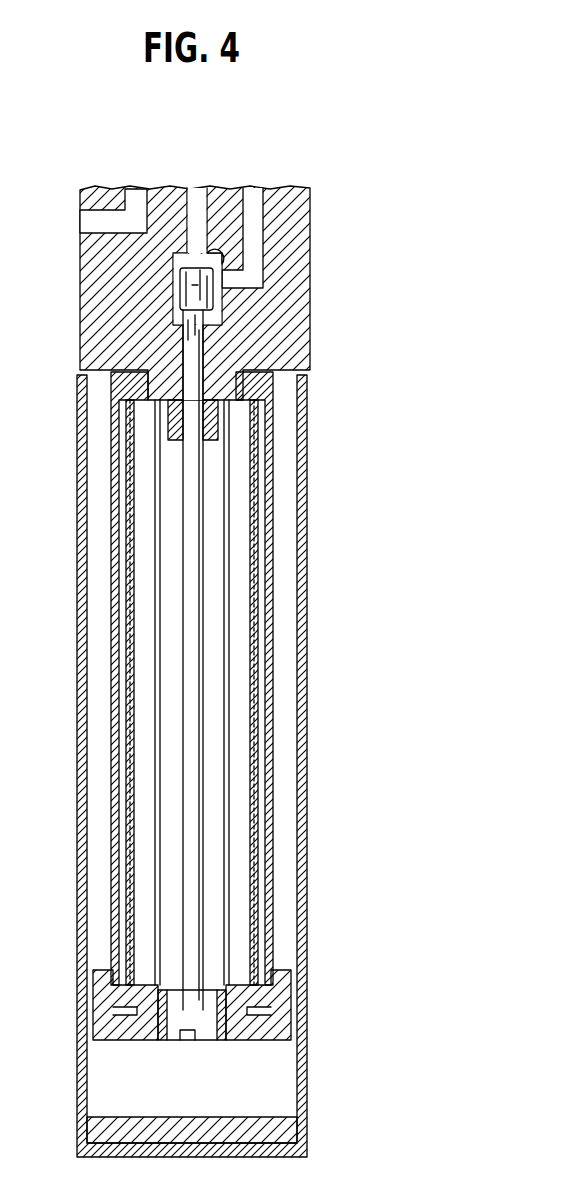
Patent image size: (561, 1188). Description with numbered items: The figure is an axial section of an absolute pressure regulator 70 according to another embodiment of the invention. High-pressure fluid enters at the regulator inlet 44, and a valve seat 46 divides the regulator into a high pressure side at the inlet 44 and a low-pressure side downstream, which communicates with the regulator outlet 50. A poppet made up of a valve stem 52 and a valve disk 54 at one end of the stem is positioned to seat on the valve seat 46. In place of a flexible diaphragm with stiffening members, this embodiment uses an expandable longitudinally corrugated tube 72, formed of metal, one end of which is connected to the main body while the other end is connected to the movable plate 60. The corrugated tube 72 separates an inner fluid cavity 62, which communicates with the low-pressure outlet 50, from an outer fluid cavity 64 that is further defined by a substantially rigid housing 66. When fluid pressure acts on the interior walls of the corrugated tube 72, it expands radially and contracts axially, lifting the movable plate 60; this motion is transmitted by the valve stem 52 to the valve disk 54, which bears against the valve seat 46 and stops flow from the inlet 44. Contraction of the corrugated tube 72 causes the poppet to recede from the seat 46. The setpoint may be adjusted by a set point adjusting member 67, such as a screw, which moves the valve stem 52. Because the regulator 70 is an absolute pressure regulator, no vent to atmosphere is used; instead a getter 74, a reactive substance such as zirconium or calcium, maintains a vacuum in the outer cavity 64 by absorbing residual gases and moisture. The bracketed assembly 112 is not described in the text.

The regulator inlet 44 is at (201, 186).
The valve seat 46 is at (219, 263).
The regulator outlet 50 is at (257, 186).
The valve disk 54 is at (220, 303).
The valve stem 52 is at (201, 862).
The movable plate 60 is at (227, 1040).
The inner fluid cavity 62 is at (215, 532).
The outer fluid cavity 64 is at (284, 638).
The housing 66 is at (306, 745).
The set point adjusting member 67 is at (167, 1040).
The absolute pressure regulator 70 is at (62, 950).
The corrugated tube 72 is at (244, 906).
The getter 74 is at (237, 1122).
The cylinder assembly 112 is at (325, 270).